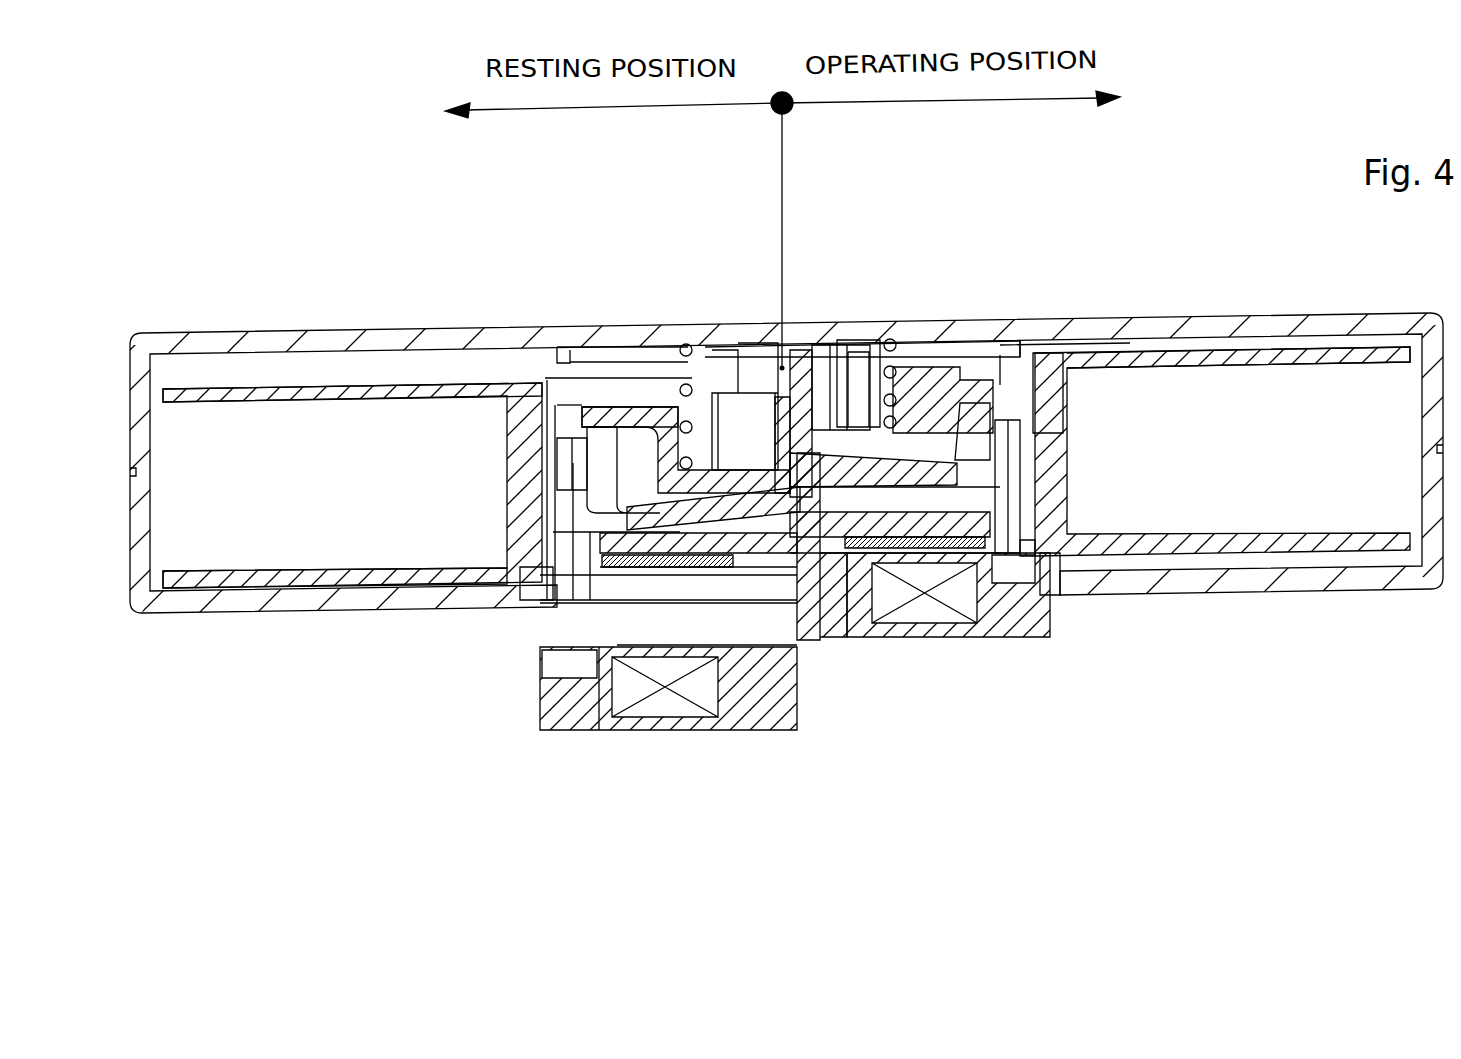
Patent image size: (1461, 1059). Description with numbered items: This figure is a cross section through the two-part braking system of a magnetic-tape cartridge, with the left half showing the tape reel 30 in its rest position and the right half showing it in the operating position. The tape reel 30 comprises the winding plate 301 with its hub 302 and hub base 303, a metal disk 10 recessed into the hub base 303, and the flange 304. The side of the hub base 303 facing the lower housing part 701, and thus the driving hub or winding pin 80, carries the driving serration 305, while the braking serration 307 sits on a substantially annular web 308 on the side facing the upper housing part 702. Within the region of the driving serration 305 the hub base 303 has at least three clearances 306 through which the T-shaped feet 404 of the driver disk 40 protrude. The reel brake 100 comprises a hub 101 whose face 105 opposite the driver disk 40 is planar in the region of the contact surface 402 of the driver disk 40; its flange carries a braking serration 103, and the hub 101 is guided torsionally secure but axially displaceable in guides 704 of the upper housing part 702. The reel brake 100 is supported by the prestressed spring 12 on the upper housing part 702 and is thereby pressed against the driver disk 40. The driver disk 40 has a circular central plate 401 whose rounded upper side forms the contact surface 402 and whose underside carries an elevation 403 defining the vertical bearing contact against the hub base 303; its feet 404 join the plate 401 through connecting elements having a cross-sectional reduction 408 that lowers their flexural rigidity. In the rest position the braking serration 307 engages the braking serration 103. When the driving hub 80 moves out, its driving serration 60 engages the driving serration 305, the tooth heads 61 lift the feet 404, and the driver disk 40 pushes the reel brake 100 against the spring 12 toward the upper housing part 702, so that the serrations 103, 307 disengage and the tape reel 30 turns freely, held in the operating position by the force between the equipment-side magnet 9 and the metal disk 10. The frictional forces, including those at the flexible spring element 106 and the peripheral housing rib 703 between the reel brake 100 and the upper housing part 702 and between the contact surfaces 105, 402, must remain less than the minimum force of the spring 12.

The tape reel 30 is at (227, 343).
The winding plate 301 is at (362, 493).
The hub 302 is at (347, 390).
The flange 304 is at (342, 576).
The driving serration 305 is at (547, 596).
The flexible spring element 106 is at (525, 497).
The reel brake 100 is at (570, 403).
The face 105 is at (660, 433).
The hub 101 is at (700, 425).
The guides 704 is at (738, 437).
The elevation 403 is at (808, 500).
The contact surface 402 is at (814, 457).
The spring 12 is at (903, 367).
The braking serration 103 is at (960, 387).
The braking serration 307 is at (983, 480).
The cross-sectional reduction 408 is at (1062, 345).
The peripheral housing rib 703 is at (1007, 345).
The upper housing part 702 is at (1220, 325).
The lower housing part 701 is at (1312, 580).
The metal disk 10 is at (603, 468).
The driving serration 60 is at (565, 662).
The magnet 9 is at (653, 705).
The driving hub 80 is at (642, 732).
The hub base 303 is at (613, 566).
The annular web 308 is at (633, 547).
The central plate 401 is at (848, 528).
The driver disk 40 is at (925, 475).
The T-shaped feet 404 is at (1008, 527).
The tooth heads 61 is at (1023, 550).
The clearances 306 is at (1060, 540).